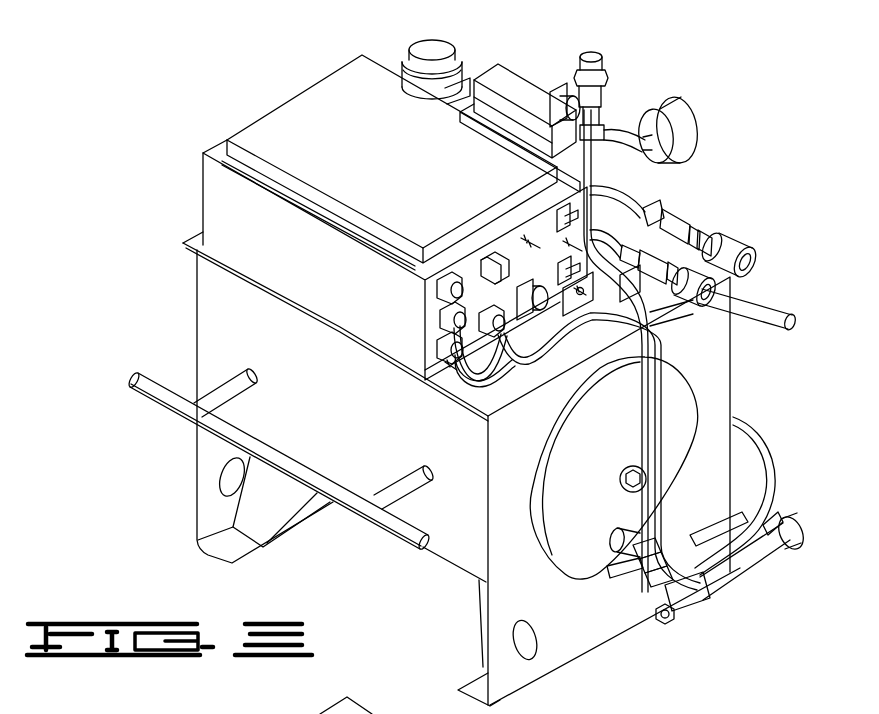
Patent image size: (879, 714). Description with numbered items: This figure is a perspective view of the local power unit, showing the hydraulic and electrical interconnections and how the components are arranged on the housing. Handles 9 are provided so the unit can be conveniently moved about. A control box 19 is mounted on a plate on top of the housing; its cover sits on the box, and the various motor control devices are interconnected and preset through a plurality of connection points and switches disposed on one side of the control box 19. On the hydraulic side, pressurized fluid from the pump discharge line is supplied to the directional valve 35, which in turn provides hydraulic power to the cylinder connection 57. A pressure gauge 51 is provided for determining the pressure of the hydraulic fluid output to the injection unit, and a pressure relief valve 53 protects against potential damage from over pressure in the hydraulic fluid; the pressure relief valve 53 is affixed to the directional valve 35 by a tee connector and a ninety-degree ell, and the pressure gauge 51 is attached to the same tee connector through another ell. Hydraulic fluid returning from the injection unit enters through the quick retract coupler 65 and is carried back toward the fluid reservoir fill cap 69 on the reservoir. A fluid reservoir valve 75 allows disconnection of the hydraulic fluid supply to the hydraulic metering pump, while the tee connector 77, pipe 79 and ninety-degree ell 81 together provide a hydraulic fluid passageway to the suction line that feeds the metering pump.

The handles 9 is at (134, 380).
The control box 19 is at (203, 192).
The directional valve 35 is at (510, 66).
The pressure gauge 51 is at (698, 133).
The pressure relief valve 53 is at (602, 55).
The cylinder connection 57 is at (754, 254).
The quick retract coupler 65 is at (716, 293).
The fluid reservoir fill cap 69 is at (412, 52).
The fluid reservoir valve 75 is at (640, 588).
The tee connector 77 is at (690, 607).
The pipe 79 is at (738, 588).
The 90° ell 81 is at (800, 540).